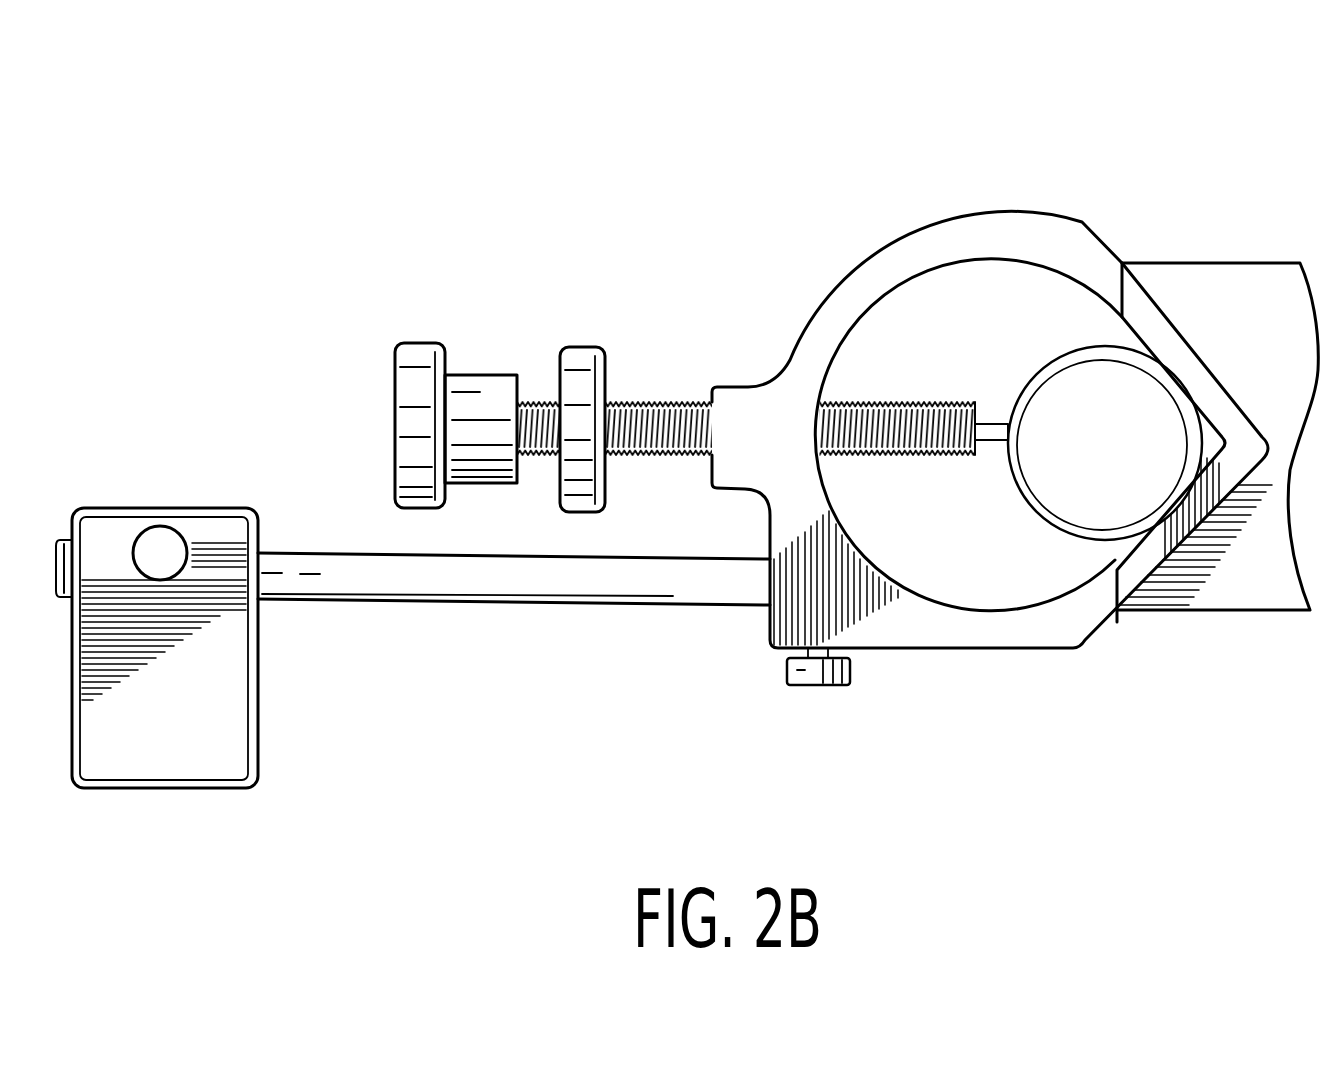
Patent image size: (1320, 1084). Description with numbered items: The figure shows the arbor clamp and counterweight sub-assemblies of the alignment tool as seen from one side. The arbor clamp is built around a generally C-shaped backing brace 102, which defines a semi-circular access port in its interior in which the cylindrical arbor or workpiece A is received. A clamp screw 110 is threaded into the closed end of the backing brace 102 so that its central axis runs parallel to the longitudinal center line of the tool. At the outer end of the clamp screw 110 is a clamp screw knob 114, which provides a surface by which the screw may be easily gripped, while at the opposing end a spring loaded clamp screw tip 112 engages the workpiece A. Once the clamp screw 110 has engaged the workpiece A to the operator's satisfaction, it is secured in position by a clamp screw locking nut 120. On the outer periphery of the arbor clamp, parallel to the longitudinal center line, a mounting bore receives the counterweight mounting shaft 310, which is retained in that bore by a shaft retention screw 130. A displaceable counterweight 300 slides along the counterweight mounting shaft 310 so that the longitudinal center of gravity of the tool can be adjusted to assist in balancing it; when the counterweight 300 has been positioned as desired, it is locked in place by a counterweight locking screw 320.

The backing brace 102 is at (995, 220).
The clamp screw 110 is at (545, 400).
The clamp screw tip 112 is at (1000, 424).
The clamp screw knob 114 is at (415, 343).
The clamp screw locking nut 120 is at (588, 347).
The shaft retention screw 130 is at (822, 687).
The counterweight 300 is at (258, 730).
The counterweight mounting shaft 310 is at (345, 553).
The counterweight locking screw 320 is at (160, 548).
The workpiece A is at (1062, 467).